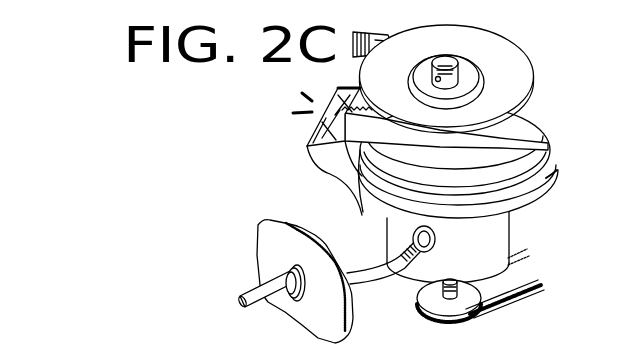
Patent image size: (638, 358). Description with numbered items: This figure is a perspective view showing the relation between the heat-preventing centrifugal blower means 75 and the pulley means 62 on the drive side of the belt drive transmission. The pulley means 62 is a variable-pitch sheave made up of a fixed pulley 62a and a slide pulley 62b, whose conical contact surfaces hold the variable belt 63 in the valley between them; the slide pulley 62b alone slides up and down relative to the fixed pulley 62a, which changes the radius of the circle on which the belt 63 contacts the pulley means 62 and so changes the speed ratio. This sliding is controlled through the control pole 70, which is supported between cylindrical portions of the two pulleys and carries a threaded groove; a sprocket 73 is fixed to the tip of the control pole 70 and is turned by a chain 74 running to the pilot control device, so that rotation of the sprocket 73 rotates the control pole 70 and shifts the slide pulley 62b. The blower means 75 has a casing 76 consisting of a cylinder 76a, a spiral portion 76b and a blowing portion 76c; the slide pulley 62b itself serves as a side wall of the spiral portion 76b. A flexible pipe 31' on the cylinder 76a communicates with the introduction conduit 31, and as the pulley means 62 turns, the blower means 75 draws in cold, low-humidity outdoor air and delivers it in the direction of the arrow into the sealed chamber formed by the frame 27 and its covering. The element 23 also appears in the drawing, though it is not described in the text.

The frame 23 is at (318, 0).
The frame 27 is at (326, 270).
The introduction conduit 31 is at (271, 286).
The flexible pipe 31' is at (391, 266).
The pulley means on the drive side 62 is at (517, 132).
The fixed pulley 62a is at (500, 47).
The slide pulley 62b is at (362, 198).
The variable belt 63 is at (383, 140).
The control pole 70 is at (450, 288).
The sprocket 73 is at (478, 283).
The chain 74 is at (509, 301).
The heat-preventing centrifugal blower means 75 is at (534, 208).
The casing 76 is at (330, 162).
The cylinder 76a is at (496, 245).
The spiral portion 76b is at (541, 167).
The blowing portion 76c is at (345, 88).